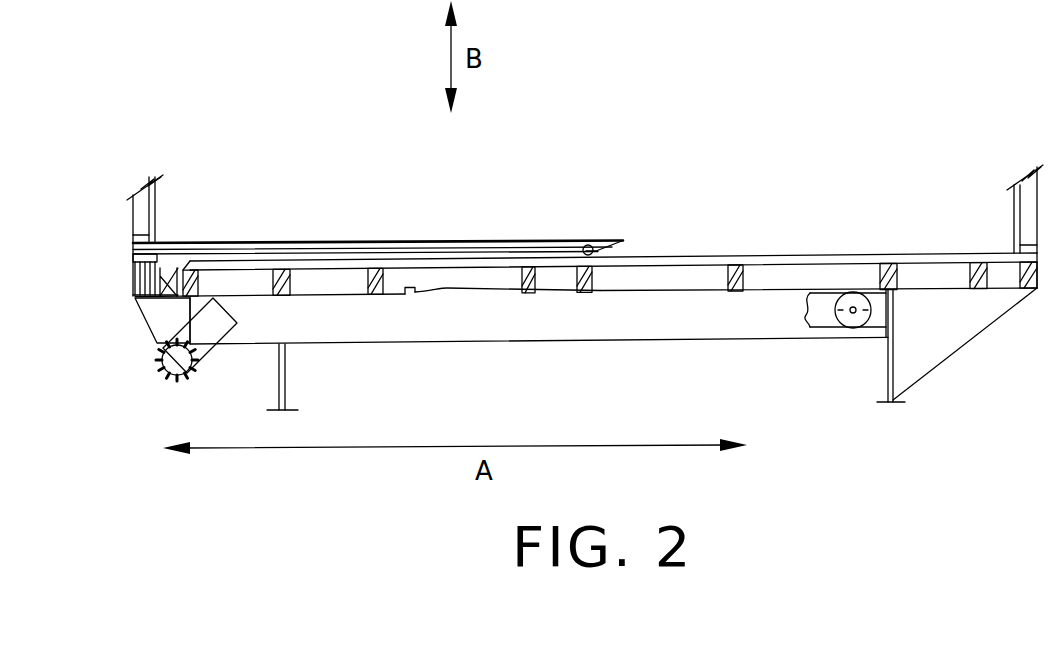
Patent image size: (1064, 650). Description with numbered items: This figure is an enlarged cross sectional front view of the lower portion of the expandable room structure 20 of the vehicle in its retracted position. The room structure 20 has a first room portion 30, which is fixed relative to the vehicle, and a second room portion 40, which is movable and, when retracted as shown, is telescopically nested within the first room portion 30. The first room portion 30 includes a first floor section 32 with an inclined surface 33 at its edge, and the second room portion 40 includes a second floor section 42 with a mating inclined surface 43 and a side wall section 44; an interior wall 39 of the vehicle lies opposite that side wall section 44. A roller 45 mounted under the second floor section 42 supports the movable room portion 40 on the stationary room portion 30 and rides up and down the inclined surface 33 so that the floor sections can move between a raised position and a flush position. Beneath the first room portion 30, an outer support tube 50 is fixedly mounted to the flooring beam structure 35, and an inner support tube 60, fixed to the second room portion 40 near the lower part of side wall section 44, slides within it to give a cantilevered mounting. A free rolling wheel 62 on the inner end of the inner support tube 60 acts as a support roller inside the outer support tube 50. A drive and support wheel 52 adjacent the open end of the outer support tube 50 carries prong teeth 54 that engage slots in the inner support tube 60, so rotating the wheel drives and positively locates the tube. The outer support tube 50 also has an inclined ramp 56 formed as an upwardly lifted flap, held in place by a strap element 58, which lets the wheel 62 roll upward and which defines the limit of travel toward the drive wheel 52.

The expandable room structure 20 is at (598, 142).
The first room portion 30 is at (833, 221).
The first floor section 32 is at (686, 257).
The inclined surface 33 is at (160, 263).
The flooring beam structure 35 is at (287, 373).
The wall 39 is at (1012, 210).
The second room portion 40 is at (362, 207).
The second floor section 42 is at (395, 242).
The mating inclined surface 43 is at (623, 241).
The side wall section 44 is at (133, 212).
The roller 45 is at (585, 246).
The outer support tube 50 is at (655, 339).
The drive and support wheel 52 is at (161, 378).
The prong teeth 54 is at (193, 377).
The inclined ramp 56 is at (447, 288).
The strap element 58 is at (405, 294).
The inner support tube 60 is at (147, 327).
The free rolling wheel 62 is at (860, 294).